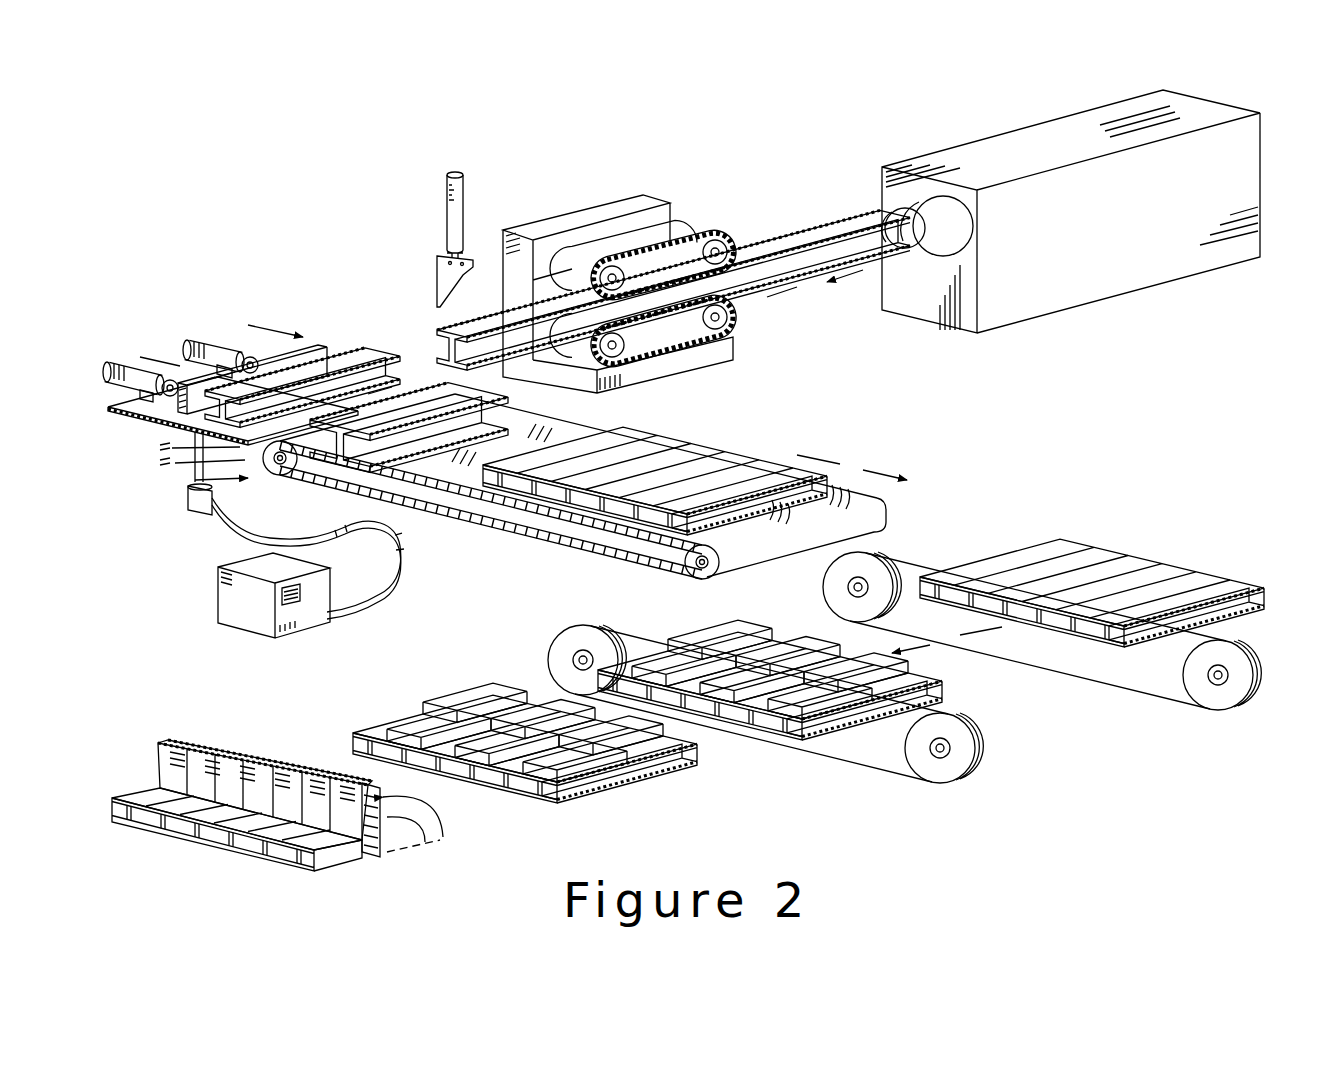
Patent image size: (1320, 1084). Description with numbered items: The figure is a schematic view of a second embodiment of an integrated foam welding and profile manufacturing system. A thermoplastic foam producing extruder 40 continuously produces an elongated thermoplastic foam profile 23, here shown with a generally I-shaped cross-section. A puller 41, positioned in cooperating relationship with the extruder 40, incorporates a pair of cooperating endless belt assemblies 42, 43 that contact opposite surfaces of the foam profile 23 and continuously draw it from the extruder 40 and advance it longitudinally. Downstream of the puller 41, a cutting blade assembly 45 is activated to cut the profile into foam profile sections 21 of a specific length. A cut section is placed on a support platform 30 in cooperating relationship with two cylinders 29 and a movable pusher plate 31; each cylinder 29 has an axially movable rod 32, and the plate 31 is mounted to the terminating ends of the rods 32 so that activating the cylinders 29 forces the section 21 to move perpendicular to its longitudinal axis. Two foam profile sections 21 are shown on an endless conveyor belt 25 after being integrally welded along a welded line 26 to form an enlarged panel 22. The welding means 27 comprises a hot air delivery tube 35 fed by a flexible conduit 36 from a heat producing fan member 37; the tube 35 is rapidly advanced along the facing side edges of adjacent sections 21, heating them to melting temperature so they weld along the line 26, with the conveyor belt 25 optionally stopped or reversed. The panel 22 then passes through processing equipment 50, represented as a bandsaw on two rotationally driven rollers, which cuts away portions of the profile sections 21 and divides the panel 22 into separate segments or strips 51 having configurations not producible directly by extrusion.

The foam profile section 21 is at (343, 363).
The enlarged panel 22 is at (753, 477).
The thermoplastic foam profile 23 is at (820, 235).
The endless conveyor belt 25 is at (843, 505).
The welded line 26 is at (312, 502).
The welding means 27 is at (197, 467).
The cylinder 29 is at (118, 363).
The support platform 30 is at (377, 390).
The pusher plate 31 is at (320, 350).
The axially movable rod 32 is at (256, 360).
The hot air delivery tube 35 is at (188, 498).
The flexible conduit 36 is at (387, 580).
The heat producing fan member 37 is at (252, 608).
The thermoplastic foam producing extruder 40 is at (990, 162).
The puller 41 is at (615, 210).
The endless belt assembly 42 is at (693, 227).
The endless belt assembly 43 is at (732, 330).
The cutting blade assembly 45 is at (446, 225).
The processing equipment 50 is at (1238, 687).
The segment or strip 51 is at (200, 765).